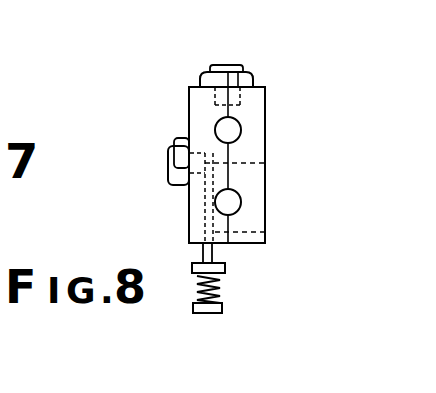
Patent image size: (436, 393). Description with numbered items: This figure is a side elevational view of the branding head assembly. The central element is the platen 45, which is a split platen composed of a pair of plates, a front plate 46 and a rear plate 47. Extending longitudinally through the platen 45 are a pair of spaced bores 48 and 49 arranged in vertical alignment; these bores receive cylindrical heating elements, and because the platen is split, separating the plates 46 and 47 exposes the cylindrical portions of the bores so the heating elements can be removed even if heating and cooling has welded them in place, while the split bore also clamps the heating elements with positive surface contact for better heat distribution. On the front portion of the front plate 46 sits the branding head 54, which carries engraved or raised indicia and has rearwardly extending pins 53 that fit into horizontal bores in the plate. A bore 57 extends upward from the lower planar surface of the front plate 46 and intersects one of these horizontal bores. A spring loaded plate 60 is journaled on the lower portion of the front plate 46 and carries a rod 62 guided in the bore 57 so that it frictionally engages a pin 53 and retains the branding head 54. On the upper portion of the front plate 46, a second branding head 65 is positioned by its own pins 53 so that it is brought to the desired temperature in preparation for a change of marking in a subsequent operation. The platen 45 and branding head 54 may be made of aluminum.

The platen 45 is at (190, 180).
The front plate 46 is at (193, 233).
The rear plate 47 is at (255, 138).
The bore 48 is at (221, 129).
The bore 49 is at (221, 207).
The pins 53 is at (265, 163).
The branding head 54 is at (172, 162).
The bore 57 is at (265, 232).
The spring loaded plate 60 is at (192, 266).
The rod 62 is at (222, 262).
The second branding head 65 is at (202, 78).